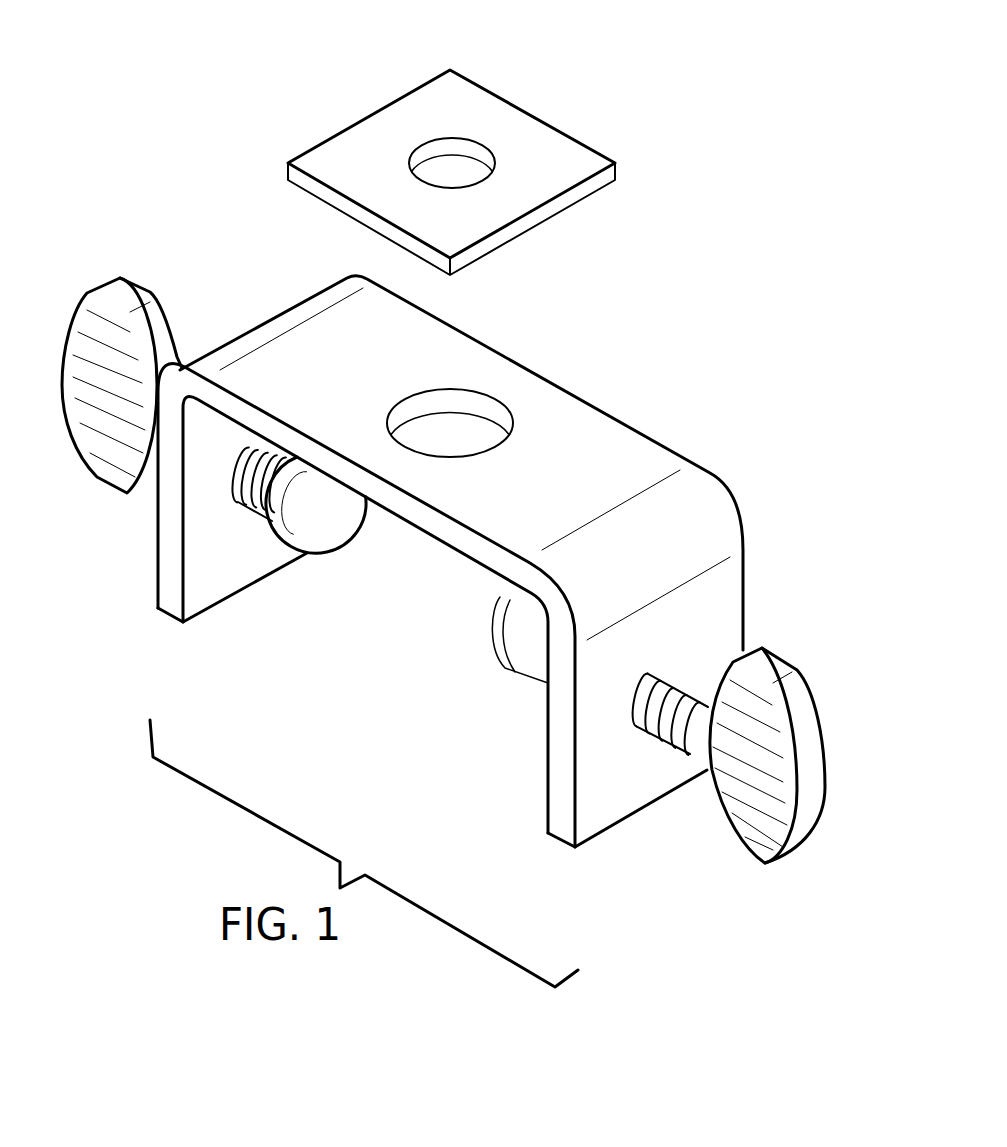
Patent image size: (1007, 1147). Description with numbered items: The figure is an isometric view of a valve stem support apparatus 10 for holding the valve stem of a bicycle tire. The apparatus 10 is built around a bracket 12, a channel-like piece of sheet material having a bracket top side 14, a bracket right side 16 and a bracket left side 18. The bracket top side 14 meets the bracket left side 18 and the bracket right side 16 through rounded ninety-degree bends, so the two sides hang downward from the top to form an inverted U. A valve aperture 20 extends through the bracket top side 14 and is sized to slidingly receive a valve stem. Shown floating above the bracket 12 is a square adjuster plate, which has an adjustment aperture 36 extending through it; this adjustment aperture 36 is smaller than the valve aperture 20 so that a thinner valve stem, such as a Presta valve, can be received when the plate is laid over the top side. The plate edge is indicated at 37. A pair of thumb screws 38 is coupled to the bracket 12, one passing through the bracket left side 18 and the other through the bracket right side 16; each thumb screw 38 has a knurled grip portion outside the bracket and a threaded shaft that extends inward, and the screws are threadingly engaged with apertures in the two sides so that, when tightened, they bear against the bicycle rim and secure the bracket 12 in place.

The valve stem support apparatus 10 is at (770, 300).
The bracket 12 is at (710, 473).
The bracket top side 14 is at (615, 450).
The bracket right side 16 is at (717, 613).
The bracket left side 18 is at (170, 535).
The valve aperture 20 is at (477, 403).
The adjustment aperture 36 is at (465, 152).
The backing plate 37 is at (605, 163).
The thumb screws 38 is at (155, 333).